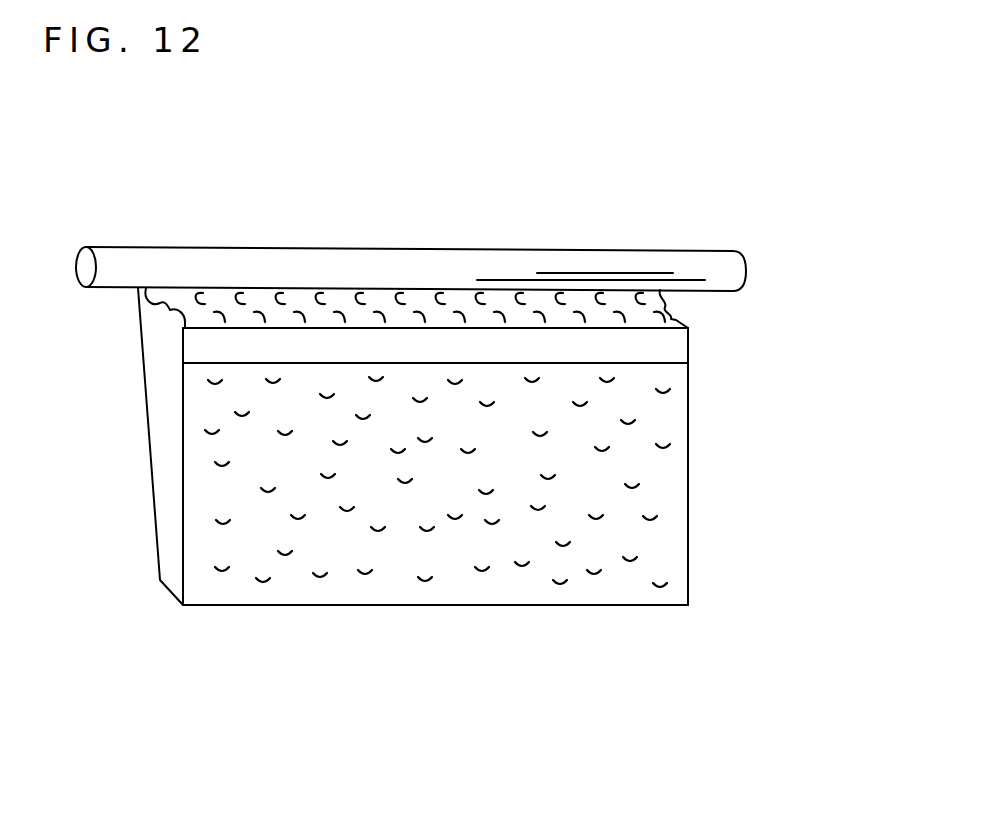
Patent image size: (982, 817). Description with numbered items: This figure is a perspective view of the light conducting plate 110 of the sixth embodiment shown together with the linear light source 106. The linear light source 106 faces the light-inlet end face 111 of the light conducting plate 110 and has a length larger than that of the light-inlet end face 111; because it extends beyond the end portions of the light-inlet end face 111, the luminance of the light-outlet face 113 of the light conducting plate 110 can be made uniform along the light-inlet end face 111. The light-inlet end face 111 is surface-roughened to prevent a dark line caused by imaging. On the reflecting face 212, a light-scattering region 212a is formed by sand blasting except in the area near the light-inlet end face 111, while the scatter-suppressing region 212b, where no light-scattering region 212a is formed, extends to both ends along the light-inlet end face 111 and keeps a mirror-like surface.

The linear light source 106 is at (612, 250).
The light conducting plate 110 is at (443, 638).
The light-inlet end face 111 is at (676, 318).
The light-outlet face 113 is at (147, 432).
The reflecting face 212 is at (817, 335).
The light-scattering region 212a is at (668, 465).
The scatter-suppressing region 212b is at (668, 350).